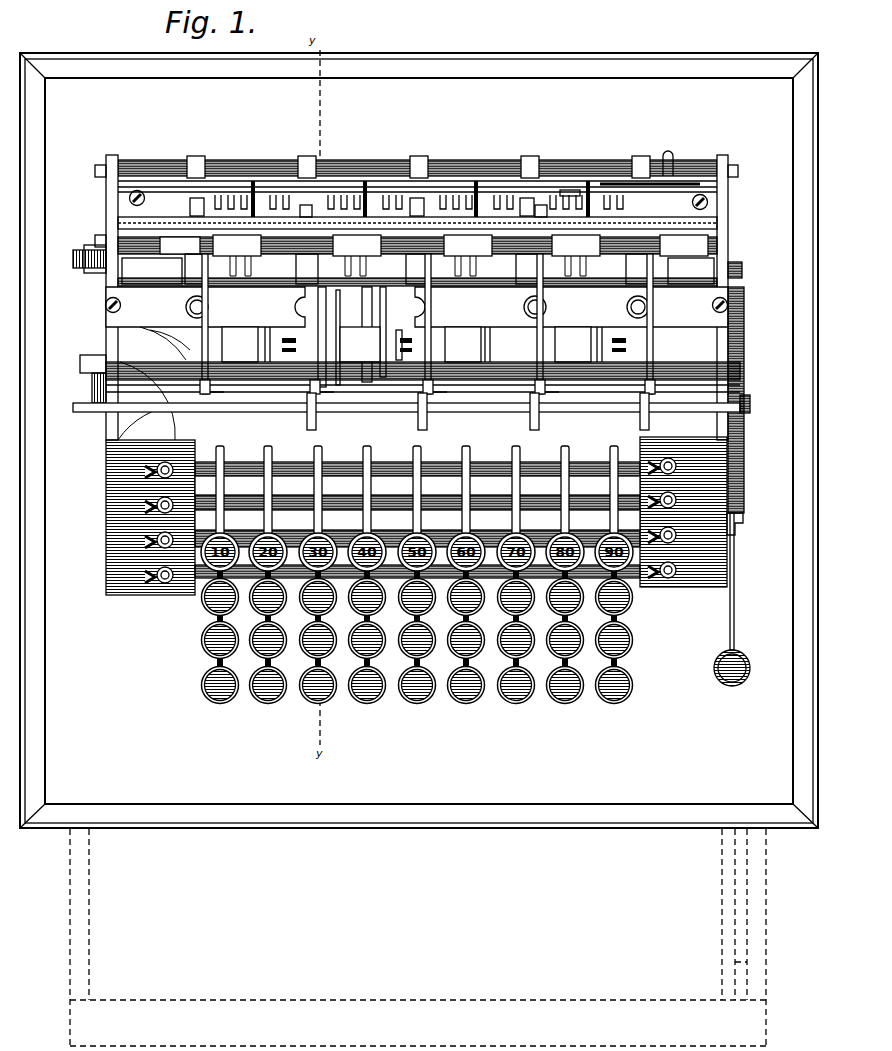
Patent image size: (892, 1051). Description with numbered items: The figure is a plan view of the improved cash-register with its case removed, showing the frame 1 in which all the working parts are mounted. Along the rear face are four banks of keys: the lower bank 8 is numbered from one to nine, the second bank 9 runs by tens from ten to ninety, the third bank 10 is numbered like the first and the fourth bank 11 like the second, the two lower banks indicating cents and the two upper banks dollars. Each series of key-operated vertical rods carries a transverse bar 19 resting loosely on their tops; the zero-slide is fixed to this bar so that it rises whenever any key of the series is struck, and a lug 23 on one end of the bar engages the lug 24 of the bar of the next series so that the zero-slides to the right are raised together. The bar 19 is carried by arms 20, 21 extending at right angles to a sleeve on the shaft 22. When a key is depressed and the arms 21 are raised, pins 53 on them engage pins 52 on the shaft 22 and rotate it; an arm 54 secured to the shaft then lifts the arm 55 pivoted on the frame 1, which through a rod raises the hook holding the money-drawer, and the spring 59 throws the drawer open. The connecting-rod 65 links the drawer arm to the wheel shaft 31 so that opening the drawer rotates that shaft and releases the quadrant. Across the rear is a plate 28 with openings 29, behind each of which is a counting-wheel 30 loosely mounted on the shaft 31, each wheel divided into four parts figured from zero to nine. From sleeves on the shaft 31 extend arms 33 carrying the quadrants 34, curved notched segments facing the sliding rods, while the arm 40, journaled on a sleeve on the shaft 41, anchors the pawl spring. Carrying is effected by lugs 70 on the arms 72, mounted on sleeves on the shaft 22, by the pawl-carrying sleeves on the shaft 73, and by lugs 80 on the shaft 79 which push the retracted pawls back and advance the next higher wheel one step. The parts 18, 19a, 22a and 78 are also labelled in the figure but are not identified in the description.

The frame 1 is at (416, 516).
The lower bank of keys 8 is at (214, 700).
The second bank of keys 9 is at (204, 652).
The third bank of keys 10 is at (207, 610).
The fourth bank of keys 11 is at (195, 595).
The type bar guides 18 is at (417, 158).
The bar 19 is at (628, 186).
The rail extension 19a is at (628, 188).
The arm 20 is at (412, 344).
The arm 21 is at (419, 205).
The shaft 22 is at (100, 363).
The pawl 22a is at (231, 209).
The lug 23 is at (361, 202).
The lug 24 is at (423, 206).
The plate 28 is at (106, 313).
The openings 29 is at (429, 307).
The wheel 30 is at (417, 269).
The shaft 31 is at (418, 271).
The arm 33 is at (373, 334).
The quadrant 34 is at (340, 337).
The arm 40 is at (417, 245).
The shaft 41 is at (684, 245).
The pins 52 is at (460, 353).
The pins 53 is at (460, 342).
The arm 54 is at (746, 400).
The arm 55 is at (732, 599).
The spring 59 is at (746, 440).
The connecting-rod 65 is at (746, 272).
The lugs 70 is at (427, 324).
The arms 72 is at (395, 395).
The shaft 73 is at (96, 380).
The brackets 78 is at (416, 390).
The shaft 79 is at (406, 415).
The lugs 80 is at (470, 415).